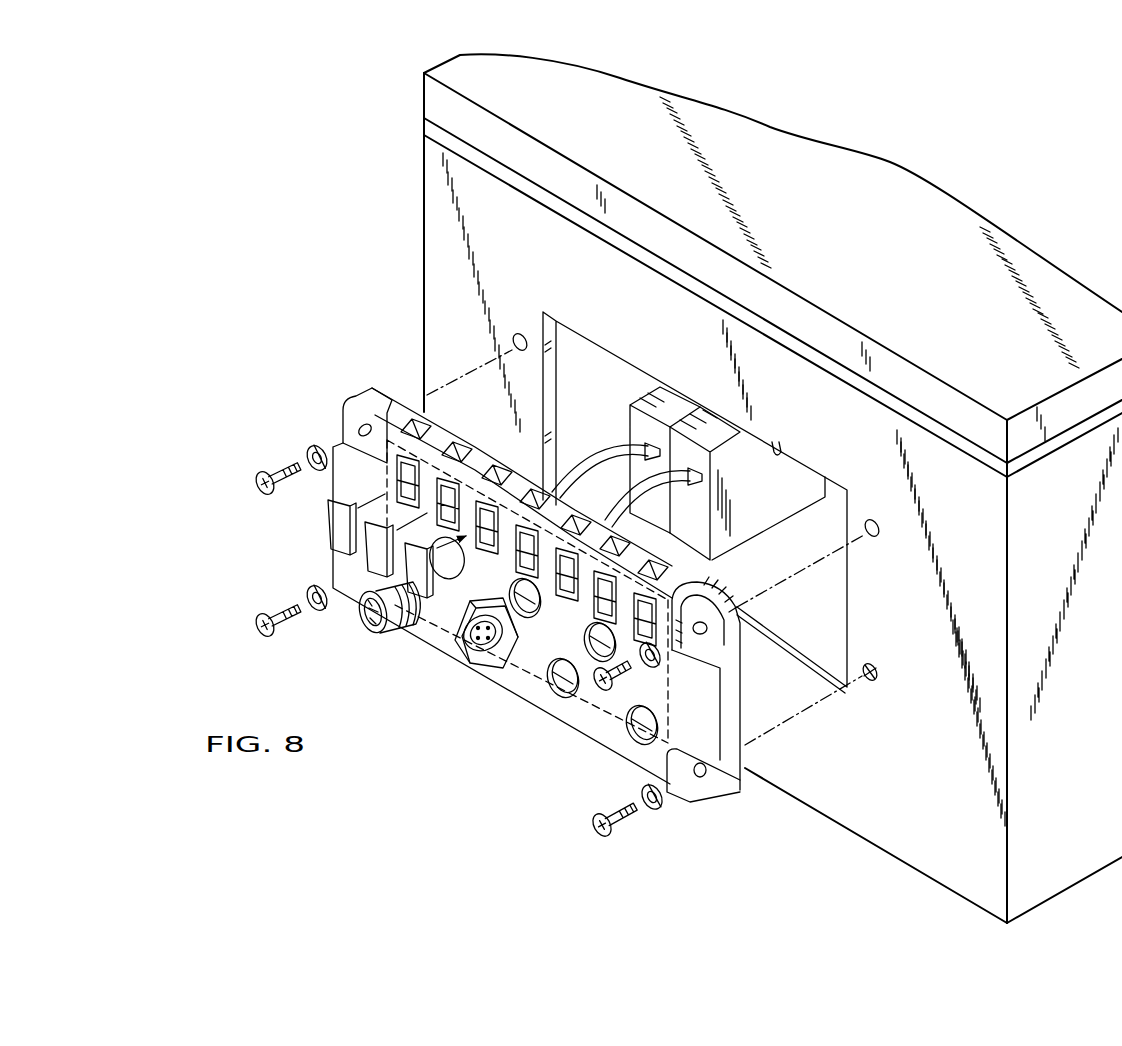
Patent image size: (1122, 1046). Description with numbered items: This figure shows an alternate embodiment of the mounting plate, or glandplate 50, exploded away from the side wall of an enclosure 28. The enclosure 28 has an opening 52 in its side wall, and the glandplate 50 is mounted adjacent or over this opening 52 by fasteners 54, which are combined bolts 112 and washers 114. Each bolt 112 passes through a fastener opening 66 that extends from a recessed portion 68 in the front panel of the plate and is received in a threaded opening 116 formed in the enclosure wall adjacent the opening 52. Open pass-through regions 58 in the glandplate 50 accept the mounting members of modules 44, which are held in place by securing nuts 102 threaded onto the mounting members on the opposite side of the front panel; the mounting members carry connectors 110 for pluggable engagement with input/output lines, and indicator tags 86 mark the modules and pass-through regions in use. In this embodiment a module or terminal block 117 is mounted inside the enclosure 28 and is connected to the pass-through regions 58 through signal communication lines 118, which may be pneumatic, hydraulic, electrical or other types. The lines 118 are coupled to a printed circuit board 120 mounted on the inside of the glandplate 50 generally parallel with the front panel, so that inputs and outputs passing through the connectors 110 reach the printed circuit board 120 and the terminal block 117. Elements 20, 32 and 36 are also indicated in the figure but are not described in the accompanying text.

The electrical enclosure assembly 20 is at (420, 60).
The enclosure 28 is at (1007, 893).
The side wall of enclosure 32 is at (902, 611).
The lid 36 is at (622, 92).
The module 44 is at (630, 414).
The glandplate 50 is at (576, 714).
The opening 52 is at (777, 450).
The fasteners 54 is at (445, 641).
The pass-through region 58 is at (560, 664).
The opening 66 is at (722, 792).
The recessed portion 68 is at (696, 606).
The indicator tags 86 is at (357, 577).
The securing nut 102 is at (402, 630).
The connectors 110 is at (372, 630).
The bolts 112 is at (283, 474).
The washers 114 is at (311, 445).
The threaded openings 116 is at (882, 674).
The terminal block 117 is at (758, 545).
The signal communication lines 118 is at (622, 492).
The printed circuit board 120 is at (545, 703).